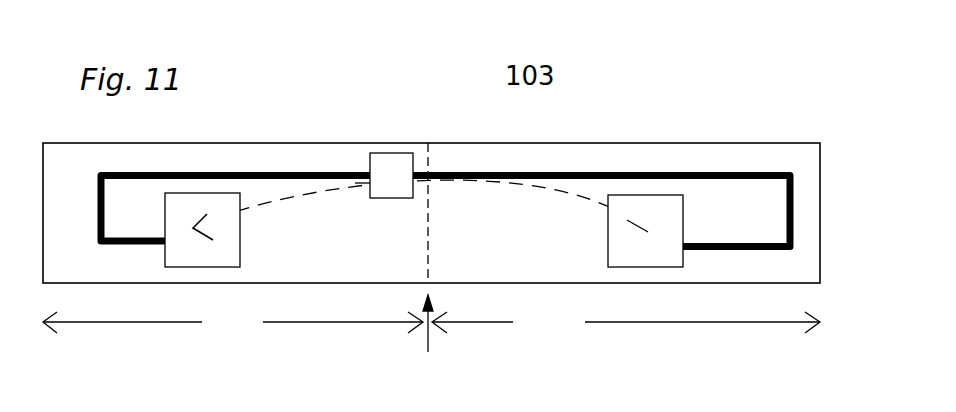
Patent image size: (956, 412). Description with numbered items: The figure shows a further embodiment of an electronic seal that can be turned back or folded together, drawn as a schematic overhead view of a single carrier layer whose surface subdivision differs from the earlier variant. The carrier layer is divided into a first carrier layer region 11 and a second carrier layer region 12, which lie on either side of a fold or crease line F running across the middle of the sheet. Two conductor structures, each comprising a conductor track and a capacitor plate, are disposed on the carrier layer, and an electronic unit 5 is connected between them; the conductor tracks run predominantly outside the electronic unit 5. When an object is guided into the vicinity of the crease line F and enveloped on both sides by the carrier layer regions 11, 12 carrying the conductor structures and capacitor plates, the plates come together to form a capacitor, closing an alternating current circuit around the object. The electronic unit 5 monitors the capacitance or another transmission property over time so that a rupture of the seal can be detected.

The electronic unit 5 is at (392, 198).
The first carrier layer region 11 is at (233, 324).
The second carrier layer region 12 is at (626, 327).
The crease line F is at (427, 347).